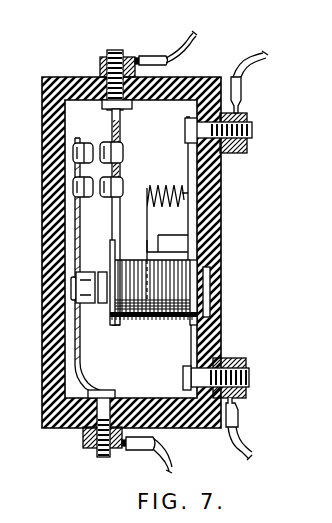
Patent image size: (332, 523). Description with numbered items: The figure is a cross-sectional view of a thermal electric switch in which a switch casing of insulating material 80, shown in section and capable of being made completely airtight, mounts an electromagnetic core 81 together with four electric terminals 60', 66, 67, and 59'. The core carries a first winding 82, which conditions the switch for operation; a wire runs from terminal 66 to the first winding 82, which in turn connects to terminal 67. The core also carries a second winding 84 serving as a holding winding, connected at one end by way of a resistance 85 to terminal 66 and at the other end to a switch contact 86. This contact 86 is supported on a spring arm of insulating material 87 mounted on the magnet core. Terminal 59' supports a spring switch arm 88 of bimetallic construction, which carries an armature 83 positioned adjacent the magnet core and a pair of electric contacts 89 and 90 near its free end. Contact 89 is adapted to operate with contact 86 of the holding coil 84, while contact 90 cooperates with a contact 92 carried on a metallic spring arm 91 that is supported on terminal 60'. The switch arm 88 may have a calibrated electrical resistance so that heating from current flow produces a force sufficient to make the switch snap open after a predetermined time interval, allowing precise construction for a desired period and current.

The electric terminal 59' is at (127, 434).
The electric terminal 60' is at (148, 68).
The electric terminal 66 is at (252, 130).
The electric terminal 67 is at (249, 376).
The switch casing of insulating material 80 is at (42, 149).
The electromagnetic core 81 is at (212, 286).
The first winding 82 is at (170, 322).
The armature 83 is at (80, 305).
The second winding 84 is at (120, 322).
The resistance 85 is at (153, 208).
The switch contact 86 is at (113, 176).
The spring arm of insulating material 87 is at (112, 257).
The spring switch arm 88 is at (81, 357).
The electric contact 89 is at (85, 197).
The electric contact 90 is at (81, 142).
The metallic spring arm 91 is at (121, 129).
The contact 92 is at (124, 146).